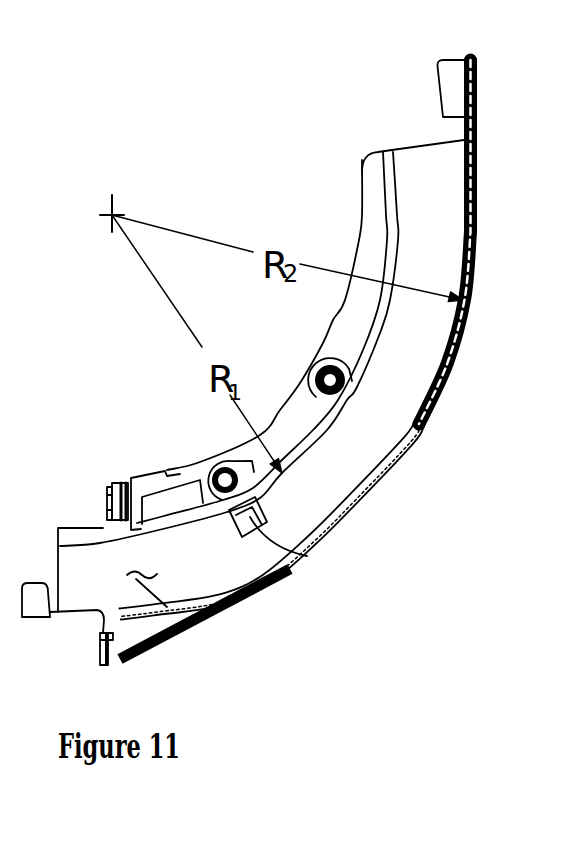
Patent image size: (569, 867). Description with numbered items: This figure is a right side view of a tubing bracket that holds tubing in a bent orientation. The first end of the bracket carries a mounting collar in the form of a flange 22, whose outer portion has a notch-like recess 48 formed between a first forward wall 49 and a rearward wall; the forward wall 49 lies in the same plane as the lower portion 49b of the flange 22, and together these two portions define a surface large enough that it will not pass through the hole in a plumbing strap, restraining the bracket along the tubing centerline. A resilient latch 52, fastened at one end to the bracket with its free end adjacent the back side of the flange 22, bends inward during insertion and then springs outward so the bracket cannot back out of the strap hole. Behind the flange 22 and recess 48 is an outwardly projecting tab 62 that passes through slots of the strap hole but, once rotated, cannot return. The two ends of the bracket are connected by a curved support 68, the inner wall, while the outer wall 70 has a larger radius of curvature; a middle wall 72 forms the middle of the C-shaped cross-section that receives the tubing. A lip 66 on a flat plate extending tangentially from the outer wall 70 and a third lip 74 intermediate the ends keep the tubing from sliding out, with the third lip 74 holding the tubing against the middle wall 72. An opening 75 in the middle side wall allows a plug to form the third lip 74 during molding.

The flange 22 is at (104, 502).
The recess 48 is at (118, 483).
The first forward wall 49 is at (109, 488).
The lower portion of the flange 49b is at (100, 664).
The latch 52 is at (153, 662).
The tab 62 is at (150, 471).
The lip 66 is at (442, 73).
The curved support (inner wall) 68 is at (322, 442).
The outer wall 70 is at (443, 389).
The middle wall 72 is at (207, 628).
The third lip 74 is at (312, 558).
The opening 75 is at (256, 535).